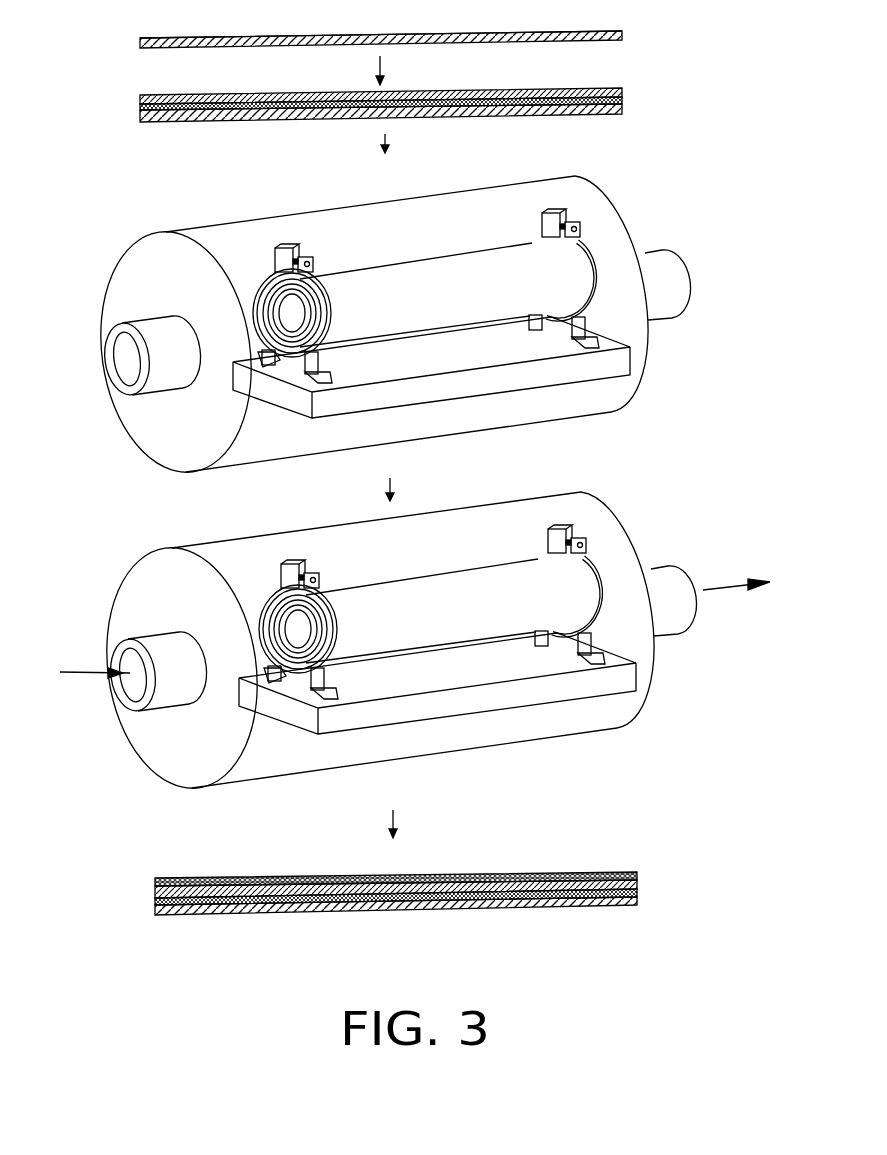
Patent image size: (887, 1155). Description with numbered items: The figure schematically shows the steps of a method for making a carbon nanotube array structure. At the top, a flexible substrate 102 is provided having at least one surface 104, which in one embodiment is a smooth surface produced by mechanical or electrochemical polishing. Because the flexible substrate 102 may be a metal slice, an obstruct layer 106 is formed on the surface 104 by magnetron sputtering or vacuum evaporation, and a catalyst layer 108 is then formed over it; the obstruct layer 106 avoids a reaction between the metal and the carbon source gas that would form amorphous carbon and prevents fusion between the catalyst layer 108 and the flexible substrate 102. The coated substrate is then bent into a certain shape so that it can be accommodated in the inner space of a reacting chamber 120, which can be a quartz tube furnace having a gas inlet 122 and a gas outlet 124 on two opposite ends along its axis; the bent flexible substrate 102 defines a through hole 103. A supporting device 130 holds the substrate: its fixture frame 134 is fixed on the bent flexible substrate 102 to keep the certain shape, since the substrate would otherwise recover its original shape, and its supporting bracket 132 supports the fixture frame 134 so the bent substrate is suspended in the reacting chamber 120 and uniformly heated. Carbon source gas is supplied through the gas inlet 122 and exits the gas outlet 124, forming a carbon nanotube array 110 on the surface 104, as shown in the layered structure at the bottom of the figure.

The flexible substrate 102 is at (622, 34).
The surface 104 is at (150, 35).
The obstruct layer 106 is at (623, 100).
The catalyst layer 108 is at (623, 90).
The carbon nanotube array 110 is at (637, 874).
The reacting chamber 120 is at (235, 237).
The gas inlet 122 is at (148, 330).
The gas outlet 124 is at (675, 268).
The through hole 103 is at (290, 313).
The supporting device 130 is at (502, 471).
The supporting bracket 132 is at (592, 290).
The fixture frame 134 is at (585, 364).